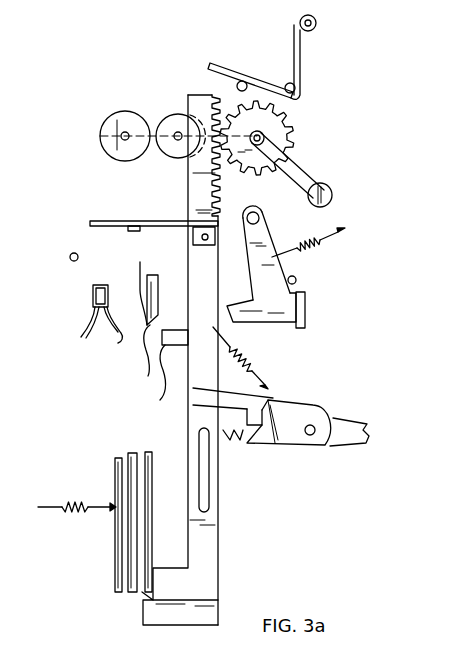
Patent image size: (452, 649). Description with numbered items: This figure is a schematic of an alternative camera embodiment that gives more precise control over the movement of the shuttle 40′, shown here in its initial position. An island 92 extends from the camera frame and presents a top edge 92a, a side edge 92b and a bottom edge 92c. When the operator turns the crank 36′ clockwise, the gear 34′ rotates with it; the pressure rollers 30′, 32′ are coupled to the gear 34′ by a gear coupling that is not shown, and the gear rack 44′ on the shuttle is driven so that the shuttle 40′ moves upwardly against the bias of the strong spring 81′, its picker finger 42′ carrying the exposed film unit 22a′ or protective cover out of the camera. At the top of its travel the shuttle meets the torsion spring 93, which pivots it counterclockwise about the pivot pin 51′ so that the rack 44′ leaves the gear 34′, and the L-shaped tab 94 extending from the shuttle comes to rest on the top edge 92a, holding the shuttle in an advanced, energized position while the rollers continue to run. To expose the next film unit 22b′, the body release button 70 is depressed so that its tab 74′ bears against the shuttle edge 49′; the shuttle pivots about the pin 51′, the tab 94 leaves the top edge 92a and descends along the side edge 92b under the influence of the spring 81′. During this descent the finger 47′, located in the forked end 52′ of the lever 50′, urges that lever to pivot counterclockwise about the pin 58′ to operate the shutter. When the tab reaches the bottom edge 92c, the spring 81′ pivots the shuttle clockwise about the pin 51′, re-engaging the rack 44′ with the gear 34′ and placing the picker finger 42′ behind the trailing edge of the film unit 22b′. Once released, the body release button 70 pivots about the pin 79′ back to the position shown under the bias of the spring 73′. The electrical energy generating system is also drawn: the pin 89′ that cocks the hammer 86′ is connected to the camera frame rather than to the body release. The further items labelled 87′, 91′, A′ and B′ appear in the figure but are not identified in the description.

The torsion spring 93 is at (258, 80).
The gear rack 44′ is at (210, 96).
The pressure roller 32′ is at (116, 112).
The pressure roller 30′ is at (182, 112).
The spur gear 34′ is at (287, 117).
The crank 36′ is at (296, 162).
The pin 79′ is at (285, 197).
The spring 73′ is at (338, 226).
The rod 87′ is at (160, 221).
The hammer 86′ is at (128, 229).
The pin 89′ is at (70, 257).
The switch 91′ is at (92, 290).
The switch contact position A′ is at (85, 339).
The switch contact position B′ is at (118, 332).
The island 92 is at (146, 283).
The top edge of island 92a is at (188, 280).
The side edge of island 92b is at (148, 376).
The bottom edge of island 92c is at (160, 400).
The shuttle edge 49′ is at (226, 300).
The body release button 70 is at (306, 302).
The tab 74′ is at (228, 328).
The L-shaped tab 94 is at (192, 400).
The spring 81′ is at (270, 390).
The finger 47′ is at (305, 400).
The forked end 52′ is at (312, 406).
The lever 50′ is at (337, 418).
The pin 58′ is at (315, 436).
The pivot pin 51′ is at (205, 436).
The shuttle 40′ is at (196, 420).
The exposed film unit 22a′ is at (152, 455).
The next succeeding film unit 22b′ is at (130, 452).
The picker finger 42′ is at (143, 608).